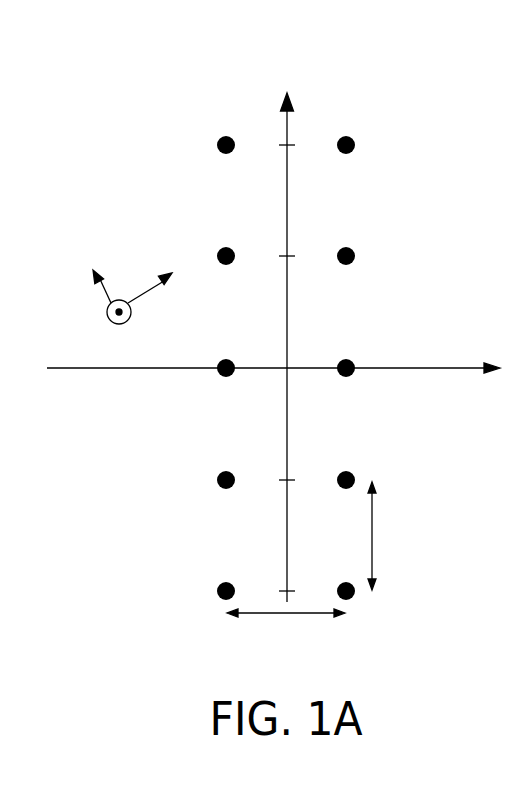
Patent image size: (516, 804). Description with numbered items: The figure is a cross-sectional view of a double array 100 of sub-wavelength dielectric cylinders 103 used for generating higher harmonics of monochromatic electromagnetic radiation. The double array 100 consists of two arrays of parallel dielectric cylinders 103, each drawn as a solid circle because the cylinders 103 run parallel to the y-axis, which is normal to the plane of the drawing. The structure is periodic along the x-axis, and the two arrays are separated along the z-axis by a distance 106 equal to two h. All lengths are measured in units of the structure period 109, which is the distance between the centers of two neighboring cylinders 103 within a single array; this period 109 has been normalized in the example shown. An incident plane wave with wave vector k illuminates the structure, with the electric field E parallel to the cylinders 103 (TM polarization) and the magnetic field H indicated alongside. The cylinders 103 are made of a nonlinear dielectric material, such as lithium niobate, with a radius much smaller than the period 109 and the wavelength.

The double array 100 is at (275, 350).
The dielectric cylinders 103 is at (376, 354).
The distance between the two arrays 106 is at (322, 615).
The structure period 109 is at (373, 532).